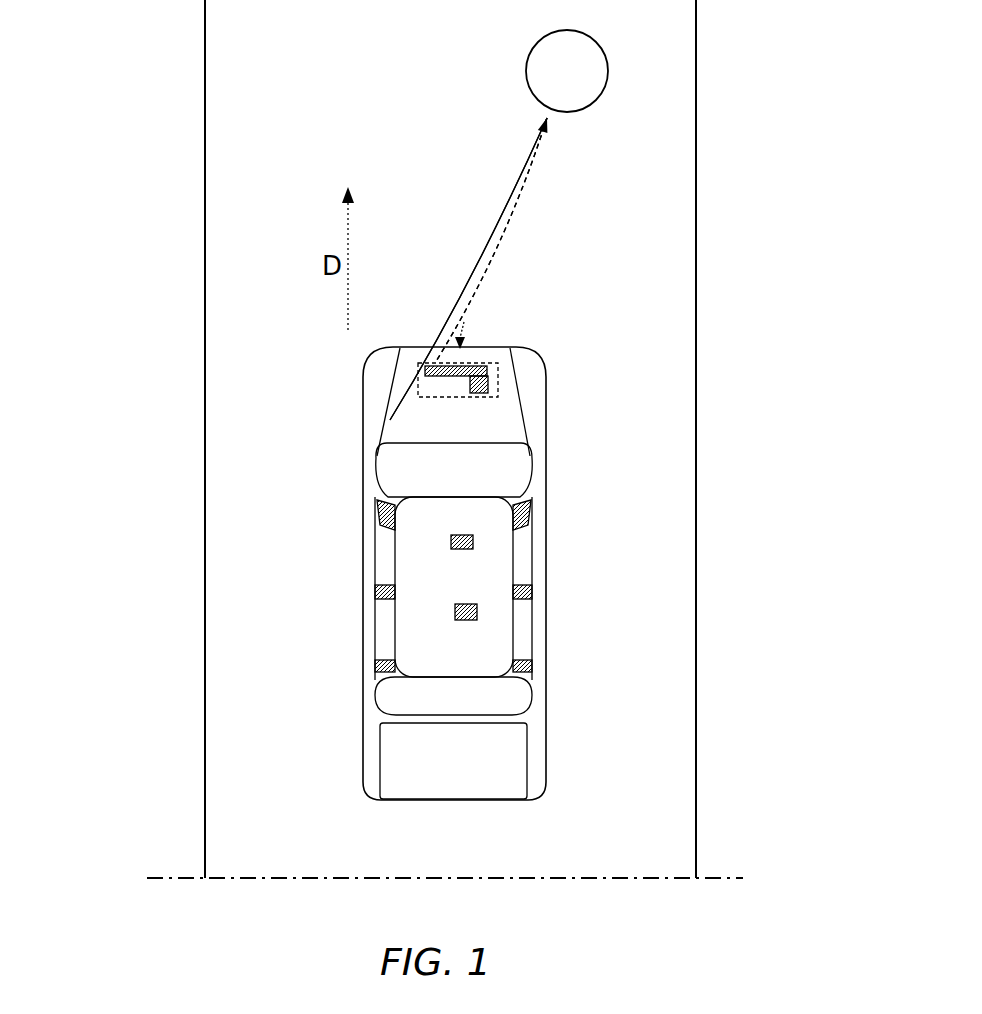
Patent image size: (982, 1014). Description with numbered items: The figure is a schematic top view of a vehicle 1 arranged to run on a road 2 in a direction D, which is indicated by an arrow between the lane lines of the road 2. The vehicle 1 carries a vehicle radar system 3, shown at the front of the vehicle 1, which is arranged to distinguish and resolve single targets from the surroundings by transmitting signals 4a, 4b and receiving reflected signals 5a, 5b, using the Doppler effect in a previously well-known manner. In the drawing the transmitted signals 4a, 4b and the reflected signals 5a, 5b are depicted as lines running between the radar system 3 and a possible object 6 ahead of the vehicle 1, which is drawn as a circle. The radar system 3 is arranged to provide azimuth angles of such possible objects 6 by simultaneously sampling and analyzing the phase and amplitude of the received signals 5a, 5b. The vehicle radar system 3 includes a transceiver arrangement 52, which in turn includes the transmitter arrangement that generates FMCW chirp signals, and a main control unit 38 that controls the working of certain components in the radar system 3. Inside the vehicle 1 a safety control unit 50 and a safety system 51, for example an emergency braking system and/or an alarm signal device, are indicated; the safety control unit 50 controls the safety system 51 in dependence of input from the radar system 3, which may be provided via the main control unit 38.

The vehicle 1 is at (462, 568).
The road 2 is at (278, 598).
The vehicle radar system 3 is at (418, 373).
The transmitted signal 4a is at (497, 225).
The transmitted signal 4b is at (497, 225).
The reflected signal 5a is at (527, 200).
The reflected signal 5b is at (527, 200).
The possible object 6 is at (585, 85).
The main control unit 38 is at (498, 388).
The safety control unit 50 is at (473, 548).
The safety system 51 is at (477, 616).
The transceiver arrangement 52 is at (418, 385).